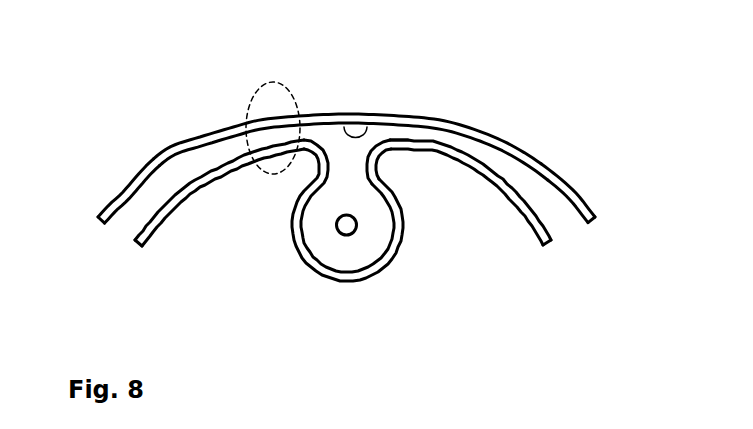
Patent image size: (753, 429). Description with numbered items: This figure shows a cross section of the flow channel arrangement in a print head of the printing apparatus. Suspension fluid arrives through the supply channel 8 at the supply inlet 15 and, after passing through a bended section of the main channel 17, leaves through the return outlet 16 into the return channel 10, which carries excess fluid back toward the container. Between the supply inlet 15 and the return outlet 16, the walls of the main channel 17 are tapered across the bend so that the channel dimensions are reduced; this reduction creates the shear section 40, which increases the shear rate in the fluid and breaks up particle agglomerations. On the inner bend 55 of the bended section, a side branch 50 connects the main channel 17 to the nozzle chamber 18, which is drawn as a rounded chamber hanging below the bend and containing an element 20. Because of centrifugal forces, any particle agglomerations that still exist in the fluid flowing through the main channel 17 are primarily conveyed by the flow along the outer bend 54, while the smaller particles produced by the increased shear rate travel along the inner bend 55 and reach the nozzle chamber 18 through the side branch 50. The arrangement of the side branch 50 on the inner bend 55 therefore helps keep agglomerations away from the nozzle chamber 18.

The supply channel 8 is at (344, 190).
The return channel 10 is at (379, 177).
The supply inlet 15 is at (106, 197).
The return outlet 16 is at (577, 188).
The main channel 17 is at (192, 162).
The nozzle chamber 18 is at (312, 218).
The rod 20 is at (336, 233).
The shear section 40 is at (254, 87).
The side branch 50 is at (380, 167).
The outer bend 54 is at (364, 138).
The inner bend 55 is at (397, 138).